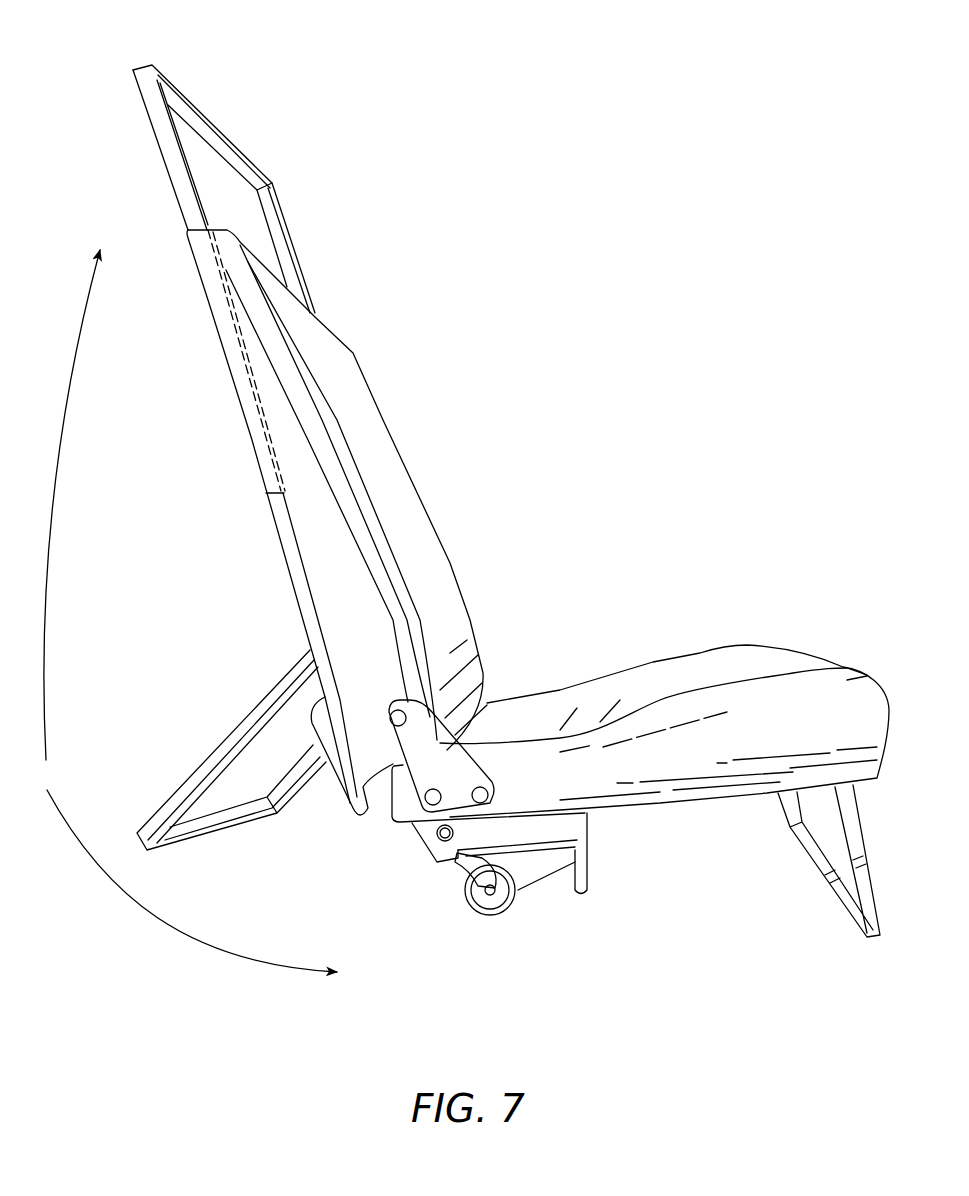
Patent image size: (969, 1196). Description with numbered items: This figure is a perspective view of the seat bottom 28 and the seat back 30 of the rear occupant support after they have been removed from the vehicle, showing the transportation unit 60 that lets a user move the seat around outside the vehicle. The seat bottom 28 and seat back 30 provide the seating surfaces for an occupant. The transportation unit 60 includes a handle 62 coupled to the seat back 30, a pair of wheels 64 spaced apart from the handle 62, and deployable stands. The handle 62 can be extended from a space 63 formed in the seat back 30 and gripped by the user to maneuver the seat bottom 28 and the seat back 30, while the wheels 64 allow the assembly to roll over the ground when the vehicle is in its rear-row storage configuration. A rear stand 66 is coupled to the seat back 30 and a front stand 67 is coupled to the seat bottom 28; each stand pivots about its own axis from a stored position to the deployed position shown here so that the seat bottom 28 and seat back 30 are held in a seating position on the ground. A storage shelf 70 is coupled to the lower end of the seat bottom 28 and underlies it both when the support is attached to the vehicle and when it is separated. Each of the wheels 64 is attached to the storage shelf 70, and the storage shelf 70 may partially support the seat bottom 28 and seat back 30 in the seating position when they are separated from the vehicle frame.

The seat bottom 28 is at (697, 653).
The seat back 30 is at (402, 447).
The transportation unit 60 is at (110, 730).
The handle 62 is at (155, 163).
The space 63 is at (223, 325).
The wheels 64 is at (482, 922).
The rear stand 66 is at (217, 742).
The front stand 67 is at (818, 880).
The storage shelf 70 is at (592, 853).